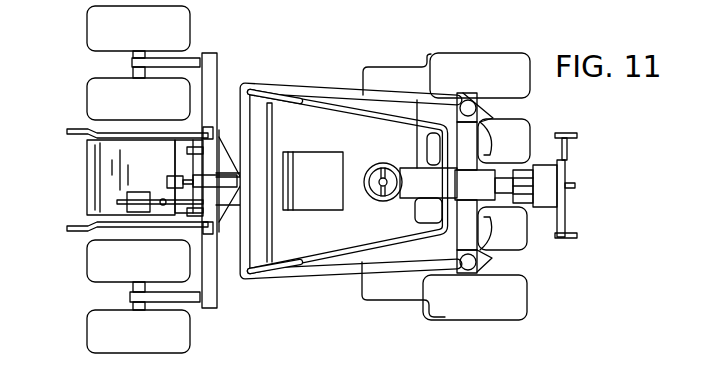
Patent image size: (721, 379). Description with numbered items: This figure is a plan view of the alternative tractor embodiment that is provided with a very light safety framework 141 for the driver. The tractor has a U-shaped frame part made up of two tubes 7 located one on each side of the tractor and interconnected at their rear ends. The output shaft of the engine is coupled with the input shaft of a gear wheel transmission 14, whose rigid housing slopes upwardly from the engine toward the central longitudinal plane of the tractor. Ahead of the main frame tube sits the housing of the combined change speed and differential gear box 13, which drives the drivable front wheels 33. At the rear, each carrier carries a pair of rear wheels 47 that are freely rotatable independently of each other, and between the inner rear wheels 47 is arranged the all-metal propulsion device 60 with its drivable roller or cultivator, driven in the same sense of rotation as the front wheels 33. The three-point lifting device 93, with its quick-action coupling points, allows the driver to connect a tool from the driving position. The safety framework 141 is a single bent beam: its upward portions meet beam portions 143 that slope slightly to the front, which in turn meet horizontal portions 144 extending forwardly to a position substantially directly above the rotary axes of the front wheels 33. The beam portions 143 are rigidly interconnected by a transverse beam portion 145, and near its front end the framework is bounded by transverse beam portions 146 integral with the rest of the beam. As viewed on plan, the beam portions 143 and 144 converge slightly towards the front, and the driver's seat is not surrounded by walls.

The tubes 7 is at (318, 93).
The combined change speed and differential gear box 13 is at (437, 183).
The gear wheel transmission 14 is at (218, 67).
The drivable front wheels 33 is at (520, 78).
The rear wheels 47 is at (103, 42).
The propulsion device 60 is at (80, 168).
The three-point lifting device 93 is at (573, 168).
The safety framework 141 is at (285, 275).
The beam portions 143 is at (265, 93).
The horizontal portions 144 is at (367, 113).
The transverse beam portion 145 is at (273, 235).
The transverse beam portions 146 is at (445, 183).